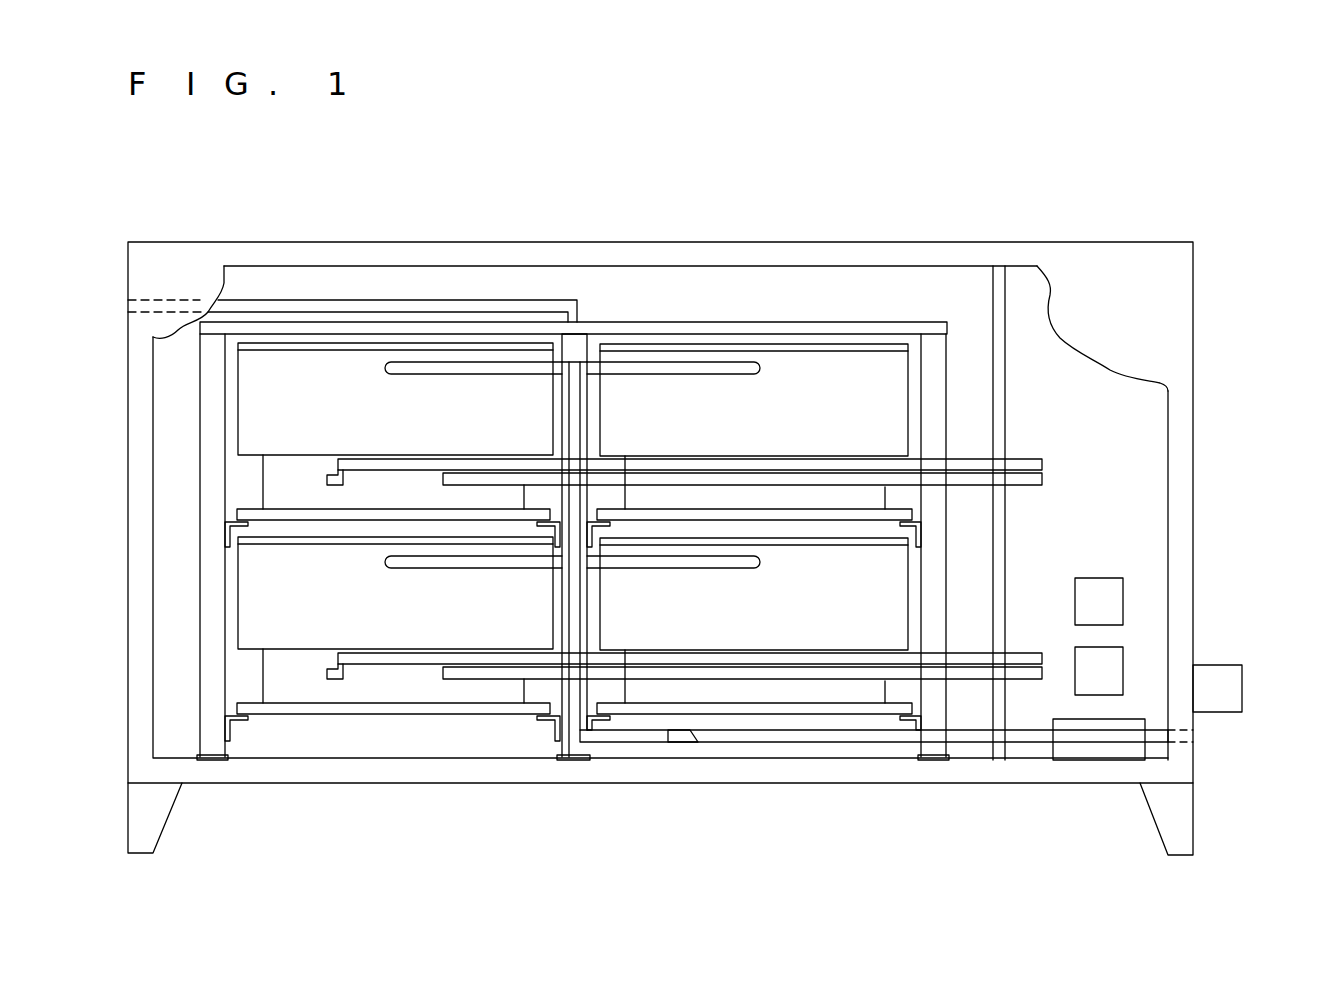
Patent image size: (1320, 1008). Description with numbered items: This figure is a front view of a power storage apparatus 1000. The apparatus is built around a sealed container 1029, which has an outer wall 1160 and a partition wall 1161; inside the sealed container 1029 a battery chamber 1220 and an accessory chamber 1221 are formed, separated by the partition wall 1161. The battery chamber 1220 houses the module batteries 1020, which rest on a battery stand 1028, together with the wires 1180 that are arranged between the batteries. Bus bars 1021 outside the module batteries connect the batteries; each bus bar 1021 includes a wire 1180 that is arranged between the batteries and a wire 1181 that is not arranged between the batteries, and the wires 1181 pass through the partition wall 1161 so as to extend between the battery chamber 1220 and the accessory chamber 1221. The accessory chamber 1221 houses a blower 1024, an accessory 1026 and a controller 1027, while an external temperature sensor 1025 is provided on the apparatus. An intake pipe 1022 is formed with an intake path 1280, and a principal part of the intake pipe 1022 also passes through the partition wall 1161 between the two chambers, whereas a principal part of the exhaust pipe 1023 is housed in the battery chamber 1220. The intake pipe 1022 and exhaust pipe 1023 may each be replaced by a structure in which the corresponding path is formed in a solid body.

The power storage apparatus 1000 is at (1093, 197).
The battery chamber 1220 is at (633, 282).
The exhaust pipe 1023 is at (392, 300).
The accessory chamber 1221 is at (1158, 465).
The battery stand 1028 is at (698, 322).
The module battery 1020 is at (910, 360).
The sealed container 1029 is at (916, 441).
The outer wall 1160 is at (885, 243).
The partition wall 1161 is at (971, 468).
The bus bar 1021 is at (684, 421).
The wire arranged between the batteries 1180 is at (722, 485).
The wire not arranged between the batteries 1181 is at (702, 417).
The intake pipe 1022 is at (787, 742).
The intake path 1280 is at (682, 742).
The controller 1027 is at (1123, 590).
The accessory 1026 is at (1123, 655).
The external temperature sensor 1025 is at (1213, 665).
The blower 1024 is at (1053, 752).